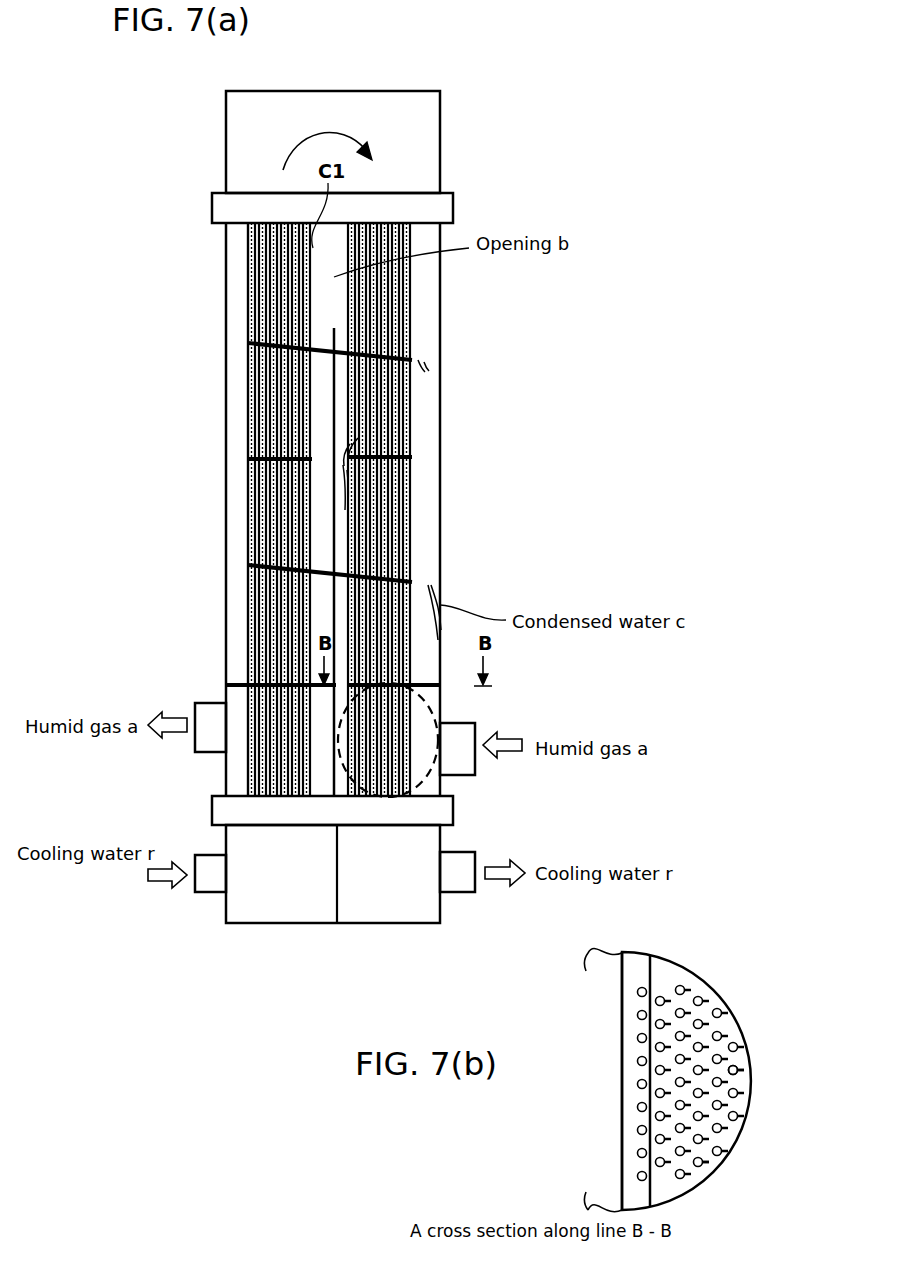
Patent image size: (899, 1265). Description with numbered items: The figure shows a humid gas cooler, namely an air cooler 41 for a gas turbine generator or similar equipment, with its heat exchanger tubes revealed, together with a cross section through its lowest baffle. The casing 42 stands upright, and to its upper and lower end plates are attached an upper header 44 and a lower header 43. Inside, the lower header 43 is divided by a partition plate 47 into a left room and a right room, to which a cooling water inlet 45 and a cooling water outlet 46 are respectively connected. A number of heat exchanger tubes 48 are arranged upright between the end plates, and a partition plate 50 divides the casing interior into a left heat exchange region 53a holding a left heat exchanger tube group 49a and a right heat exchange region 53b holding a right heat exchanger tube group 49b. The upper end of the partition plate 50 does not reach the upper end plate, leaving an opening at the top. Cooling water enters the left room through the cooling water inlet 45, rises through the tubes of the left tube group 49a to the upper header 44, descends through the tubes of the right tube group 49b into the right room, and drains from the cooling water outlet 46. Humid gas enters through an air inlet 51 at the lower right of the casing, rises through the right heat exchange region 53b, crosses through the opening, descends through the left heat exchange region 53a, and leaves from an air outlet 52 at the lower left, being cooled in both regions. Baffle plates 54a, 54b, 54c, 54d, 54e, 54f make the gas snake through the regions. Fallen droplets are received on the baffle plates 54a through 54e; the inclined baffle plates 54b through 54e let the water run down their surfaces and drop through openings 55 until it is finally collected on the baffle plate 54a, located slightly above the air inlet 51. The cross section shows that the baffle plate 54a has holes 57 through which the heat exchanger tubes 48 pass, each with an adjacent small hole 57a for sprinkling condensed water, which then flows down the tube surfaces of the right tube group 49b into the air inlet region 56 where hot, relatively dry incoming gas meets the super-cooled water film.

In FIG. 7A, the air cooler 41 is at (465, 327).
In FIG. 7A, the casing 42 is at (226, 345).
In FIG. 7A, the lower header 43 is at (277, 923).
In FIG. 7A, the upper header 44 is at (378, 92).
In FIG. 7A, the cooling water inlet 45 is at (200, 893).
In FIG. 7A, the cooling water outlet 46 is at (455, 893).
In FIG. 7A, the partition plate 47 is at (338, 905).
In FIG. 7A, the heat exchanger tube 48 is at (250, 540).
In FIG. 7A, the left heat exchanger tube group 49a is at (250, 280).
In FIG. 7A, the right heat exchanger tube group 49b is at (412, 298).
In FIG. 7B, the right heat exchanger tube group 49b is at (732, 1142).
In FIG. 7A, the partition plate 50 is at (334, 400).
In FIG. 7B, the partition plate 50 is at (622, 1160).
In FIG. 7A, the air inlet 51 is at (475, 726).
In FIG. 7A, the air outlet 52 is at (195, 706).
In FIG. 7A, the left heat exchange region 53a is at (232, 478).
In FIG. 7A, the right heat exchange region 53b is at (432, 530).
In FIG. 7A, the baffle plate 54a is at (440, 686).
In FIG. 7B, the baffle plate 54a is at (650, 972).
In FIG. 7A, the baffle plate 54b is at (250, 565).
In FIG. 7A, the baffle plate 54c is at (412, 457).
In FIG. 7A, the baffle plate 54d is at (412, 357).
In FIG. 7A, the baffle plate 54e is at (250, 460).
In FIG. 7A, the baffle plate 54f is at (230, 683).
In FIG. 7A, the opening 55 is at (430, 367).
In FIG. 7A, the air inlet region 56 is at (437, 790).
In FIG. 7B, the hole 57 is at (742, 1080).
In FIG. 7B, the small hole 57a is at (747, 1070).